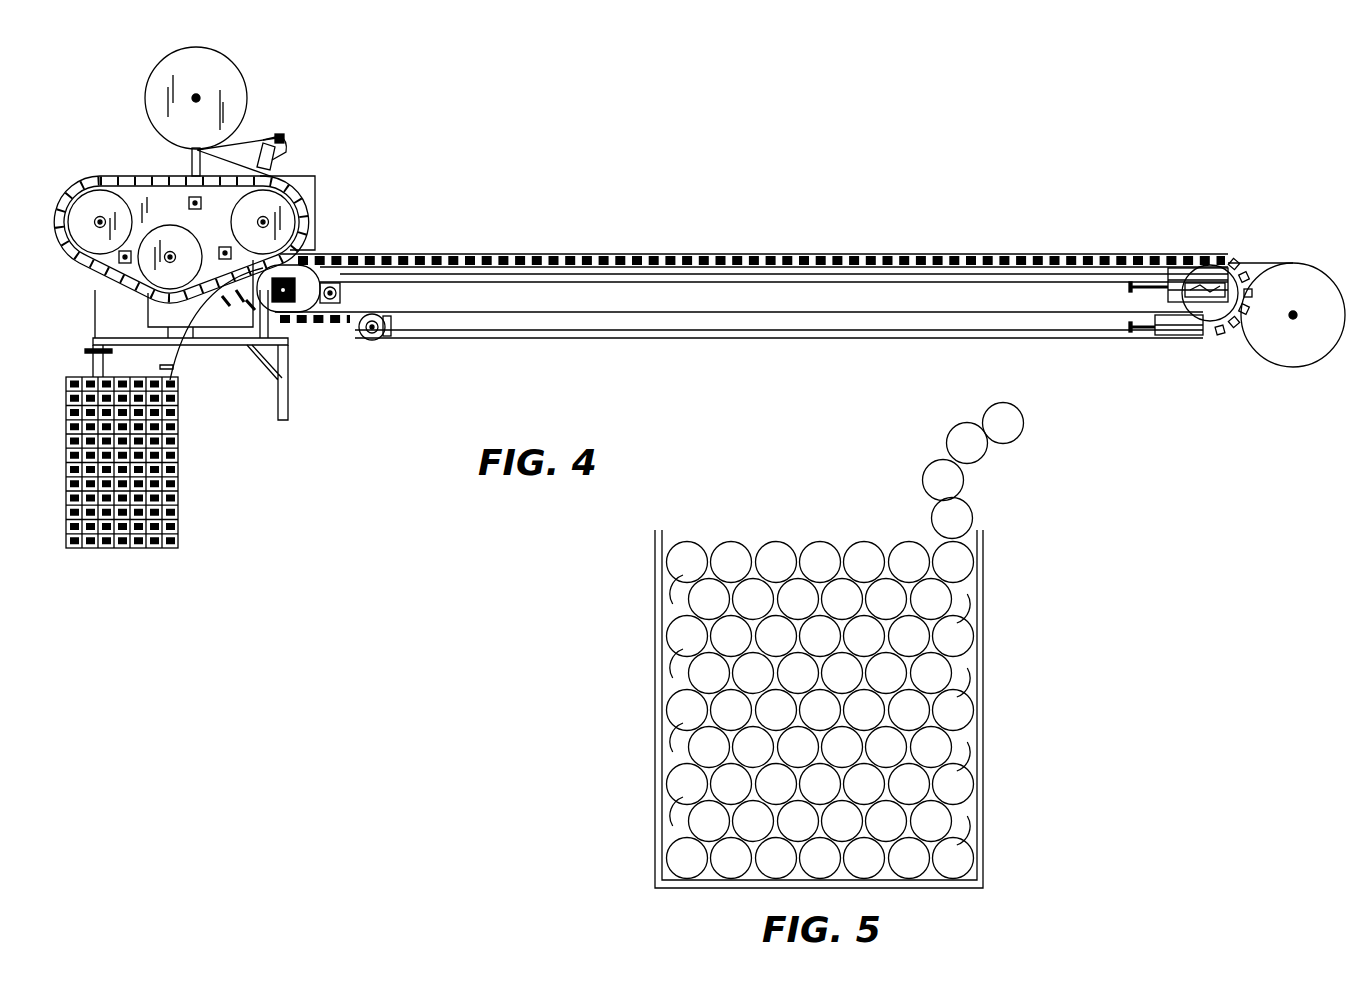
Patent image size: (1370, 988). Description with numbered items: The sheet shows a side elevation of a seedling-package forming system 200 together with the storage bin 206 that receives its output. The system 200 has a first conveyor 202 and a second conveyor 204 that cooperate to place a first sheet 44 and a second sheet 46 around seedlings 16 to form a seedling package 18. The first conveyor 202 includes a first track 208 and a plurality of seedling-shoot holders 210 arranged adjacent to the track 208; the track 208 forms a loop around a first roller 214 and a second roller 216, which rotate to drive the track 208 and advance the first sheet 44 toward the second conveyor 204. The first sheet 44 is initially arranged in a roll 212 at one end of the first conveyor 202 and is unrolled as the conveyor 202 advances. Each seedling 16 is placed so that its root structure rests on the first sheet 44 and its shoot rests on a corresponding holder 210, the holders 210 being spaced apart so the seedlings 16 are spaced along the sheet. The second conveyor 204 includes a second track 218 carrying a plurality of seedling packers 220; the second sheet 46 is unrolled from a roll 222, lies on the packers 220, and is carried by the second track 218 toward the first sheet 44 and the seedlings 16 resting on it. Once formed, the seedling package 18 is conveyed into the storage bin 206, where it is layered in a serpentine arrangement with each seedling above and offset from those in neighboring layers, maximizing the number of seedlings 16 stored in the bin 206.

In FIG. 5, the seedlings 16 is at (1015, 440).
In FIG. 4, the seedling package 18 is at (70, 368).
In FIG. 5, the seedling package 18 is at (915, 462).
In FIG. 4, the first sheet 44 is at (1252, 262).
In FIG. 4, the second sheet 46 is at (238, 156).
In FIG. 4, the seedling-package forming system 200 is at (1040, 98).
In FIG. 4, the first conveyor 202 is at (1048, 242).
In FIG. 4, the second conveyor 204 is at (104, 78).
In FIG. 4, the storage bin 206 is at (188, 438).
In FIG. 5, the storage bin 206 is at (1000, 614).
In FIG. 4, the first track 208 is at (847, 270).
In FIG. 4, the seedling-shoot holders 210 is at (685, 248).
In FIG. 4, the roll 212 is at (1306, 262).
In FIG. 4, the first roller 214 is at (1218, 320).
In FIG. 4, the second roller 216 is at (300, 306).
In FIG. 4, the second track 218 is at (143, 172).
In FIG. 4, the seedling packers 220 is at (303, 172).
In FIG. 4, the roll 222 is at (250, 53).